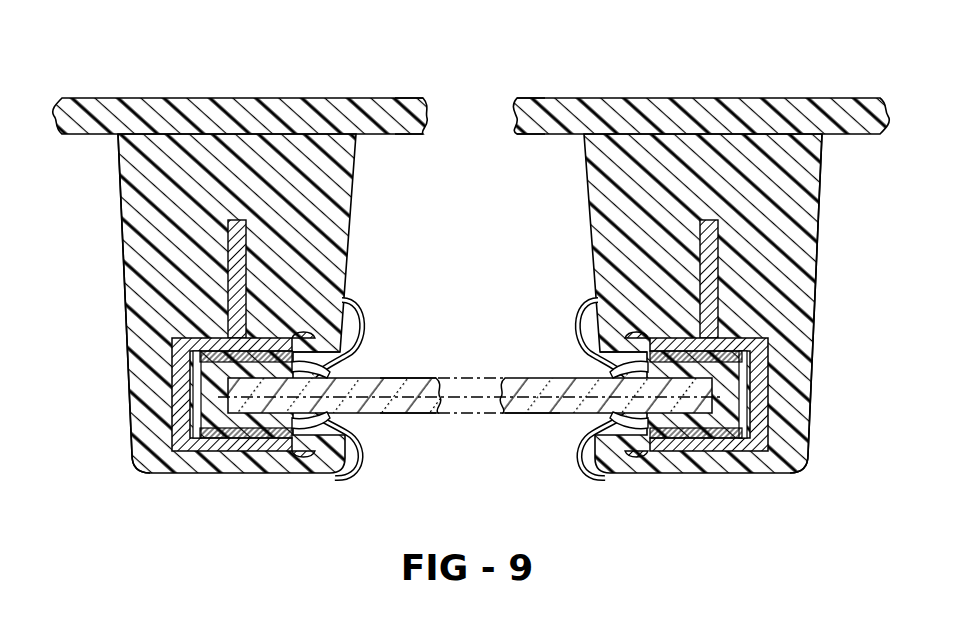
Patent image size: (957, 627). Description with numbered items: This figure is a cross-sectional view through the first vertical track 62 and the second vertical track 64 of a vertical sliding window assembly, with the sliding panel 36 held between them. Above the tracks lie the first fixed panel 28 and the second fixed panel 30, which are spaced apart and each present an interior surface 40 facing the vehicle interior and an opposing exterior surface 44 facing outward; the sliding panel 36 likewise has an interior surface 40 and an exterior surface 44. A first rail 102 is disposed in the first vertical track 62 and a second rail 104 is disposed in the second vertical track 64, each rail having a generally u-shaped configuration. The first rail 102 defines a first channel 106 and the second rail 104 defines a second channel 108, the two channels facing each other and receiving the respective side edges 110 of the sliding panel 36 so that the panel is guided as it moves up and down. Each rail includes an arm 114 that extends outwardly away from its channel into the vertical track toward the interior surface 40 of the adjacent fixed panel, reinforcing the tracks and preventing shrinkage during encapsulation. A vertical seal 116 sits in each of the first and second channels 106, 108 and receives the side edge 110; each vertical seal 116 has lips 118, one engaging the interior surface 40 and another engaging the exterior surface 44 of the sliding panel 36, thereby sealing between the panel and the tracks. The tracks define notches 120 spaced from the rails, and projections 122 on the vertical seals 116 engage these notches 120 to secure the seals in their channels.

The first fixed panel 28 is at (742, 98).
The second fixed panel 30 is at (197, 98).
The sliding panel 36 is at (423, 378).
The interior surface 40 is at (406, 140).
The exterior surface 44 is at (405, 95).
The first vertical track 62 is at (812, 235).
The second vertical track 64 is at (128, 235).
The first rail 102 is at (795, 395).
The second rail 104 is at (150, 400).
The first channel 106 is at (725, 416).
The second channel 108 is at (217, 416).
The side edge 110 is at (225, 384).
The arm 114 is at (240, 268).
The vertical seal 116 is at (356, 296).
The lip 118 is at (360, 332).
The notch 120 is at (318, 452).
The projection 122 is at (308, 338).